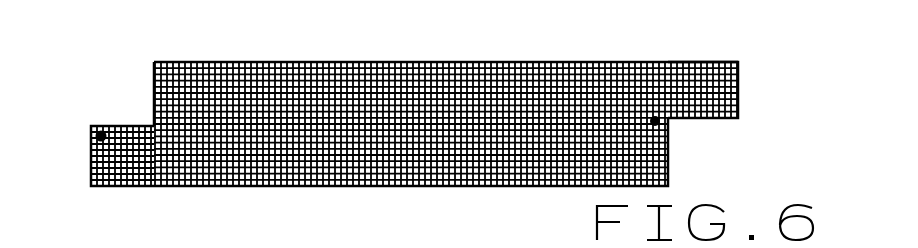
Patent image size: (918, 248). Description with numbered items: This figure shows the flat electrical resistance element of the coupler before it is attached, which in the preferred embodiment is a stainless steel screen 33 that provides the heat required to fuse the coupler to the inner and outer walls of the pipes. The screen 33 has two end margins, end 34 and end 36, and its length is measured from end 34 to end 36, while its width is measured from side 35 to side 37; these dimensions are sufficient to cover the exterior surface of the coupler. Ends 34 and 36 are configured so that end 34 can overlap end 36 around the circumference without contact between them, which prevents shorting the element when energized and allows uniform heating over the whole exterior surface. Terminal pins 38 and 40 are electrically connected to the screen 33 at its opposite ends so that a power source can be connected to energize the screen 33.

The screen 33 is at (434, 190).
The end margin 34 is at (744, 69).
The side 35 is at (273, 189).
The end margin 36 is at (72, 147).
The side 37 is at (427, 44).
The terminal pin 38 is at (664, 127).
The terminal pin 40 is at (97, 108).